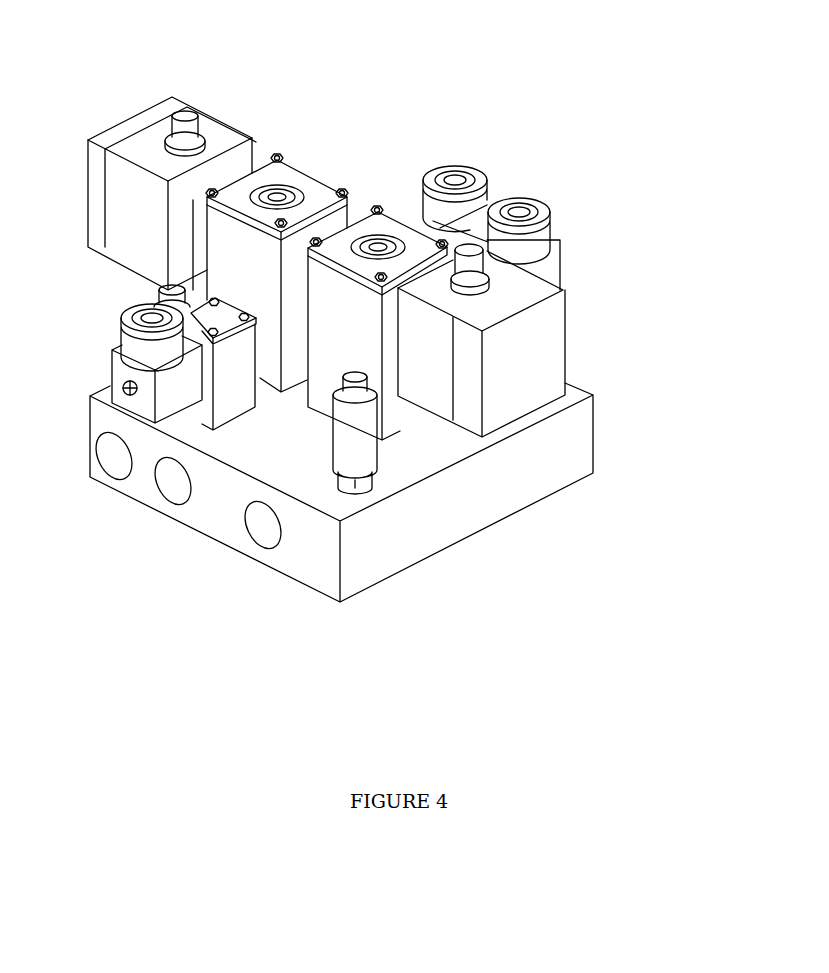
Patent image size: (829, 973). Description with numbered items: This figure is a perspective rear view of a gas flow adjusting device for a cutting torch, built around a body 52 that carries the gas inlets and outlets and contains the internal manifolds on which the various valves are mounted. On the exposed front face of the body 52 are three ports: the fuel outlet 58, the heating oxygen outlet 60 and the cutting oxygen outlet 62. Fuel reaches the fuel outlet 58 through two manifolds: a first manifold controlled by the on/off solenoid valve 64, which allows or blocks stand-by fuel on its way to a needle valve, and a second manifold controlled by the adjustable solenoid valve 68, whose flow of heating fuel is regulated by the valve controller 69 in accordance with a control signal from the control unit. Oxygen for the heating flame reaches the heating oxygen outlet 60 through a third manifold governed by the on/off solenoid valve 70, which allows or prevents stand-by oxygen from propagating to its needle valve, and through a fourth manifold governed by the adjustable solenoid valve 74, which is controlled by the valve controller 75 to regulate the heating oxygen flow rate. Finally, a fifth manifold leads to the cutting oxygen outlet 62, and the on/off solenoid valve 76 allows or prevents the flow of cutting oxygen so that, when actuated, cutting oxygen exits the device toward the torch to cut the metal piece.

The body 52 is at (463, 512).
The fuel outlet 58 is at (272, 540).
The heating oxygen outlet 60 is at (123, 467).
The cutting oxygen outlet 62 is at (182, 493).
The on/off solenoid valve 64 is at (548, 260).
The adjustable solenoid valve 68 is at (407, 227).
The valve controller 69 is at (507, 278).
The on/off solenoid valve 70 is at (480, 177).
The adjustable solenoid valve 74 is at (310, 180).
The valve controller 75 is at (220, 140).
The on/off solenoid valve 76 is at (147, 303).